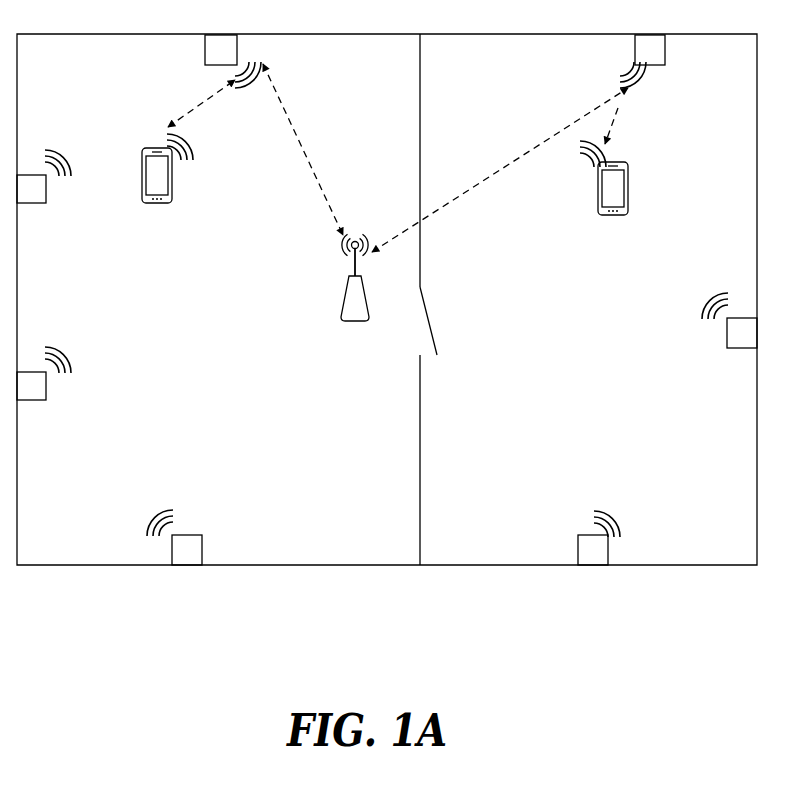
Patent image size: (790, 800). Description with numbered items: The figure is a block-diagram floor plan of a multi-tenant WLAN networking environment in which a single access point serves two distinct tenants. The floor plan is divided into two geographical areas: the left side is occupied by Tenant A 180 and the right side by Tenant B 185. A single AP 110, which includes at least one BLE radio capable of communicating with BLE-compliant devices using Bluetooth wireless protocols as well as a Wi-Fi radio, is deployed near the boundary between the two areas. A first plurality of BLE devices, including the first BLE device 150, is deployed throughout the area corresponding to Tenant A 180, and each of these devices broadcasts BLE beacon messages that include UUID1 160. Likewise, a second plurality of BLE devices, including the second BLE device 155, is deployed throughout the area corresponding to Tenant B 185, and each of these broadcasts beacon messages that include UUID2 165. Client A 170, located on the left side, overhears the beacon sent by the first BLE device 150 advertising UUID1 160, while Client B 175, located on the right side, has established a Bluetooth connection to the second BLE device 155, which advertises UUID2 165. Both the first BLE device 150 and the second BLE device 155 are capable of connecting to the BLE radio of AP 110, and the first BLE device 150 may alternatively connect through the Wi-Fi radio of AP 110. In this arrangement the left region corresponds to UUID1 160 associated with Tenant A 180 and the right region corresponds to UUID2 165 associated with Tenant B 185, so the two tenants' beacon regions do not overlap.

The access point (AP) 110 is at (297, 322).
The BLE Device 1 150 is at (144, 84).
The BLE Device 2 155 is at (635, 50).
The UUID1 160 is at (175, 500).
The UUID2 165 is at (607, 505).
The Client A 170 is at (173, 252).
The Client B 175 is at (599, 260).
The Tenant A 180 is at (316, 457).
The Tenant B 185 is at (471, 457).